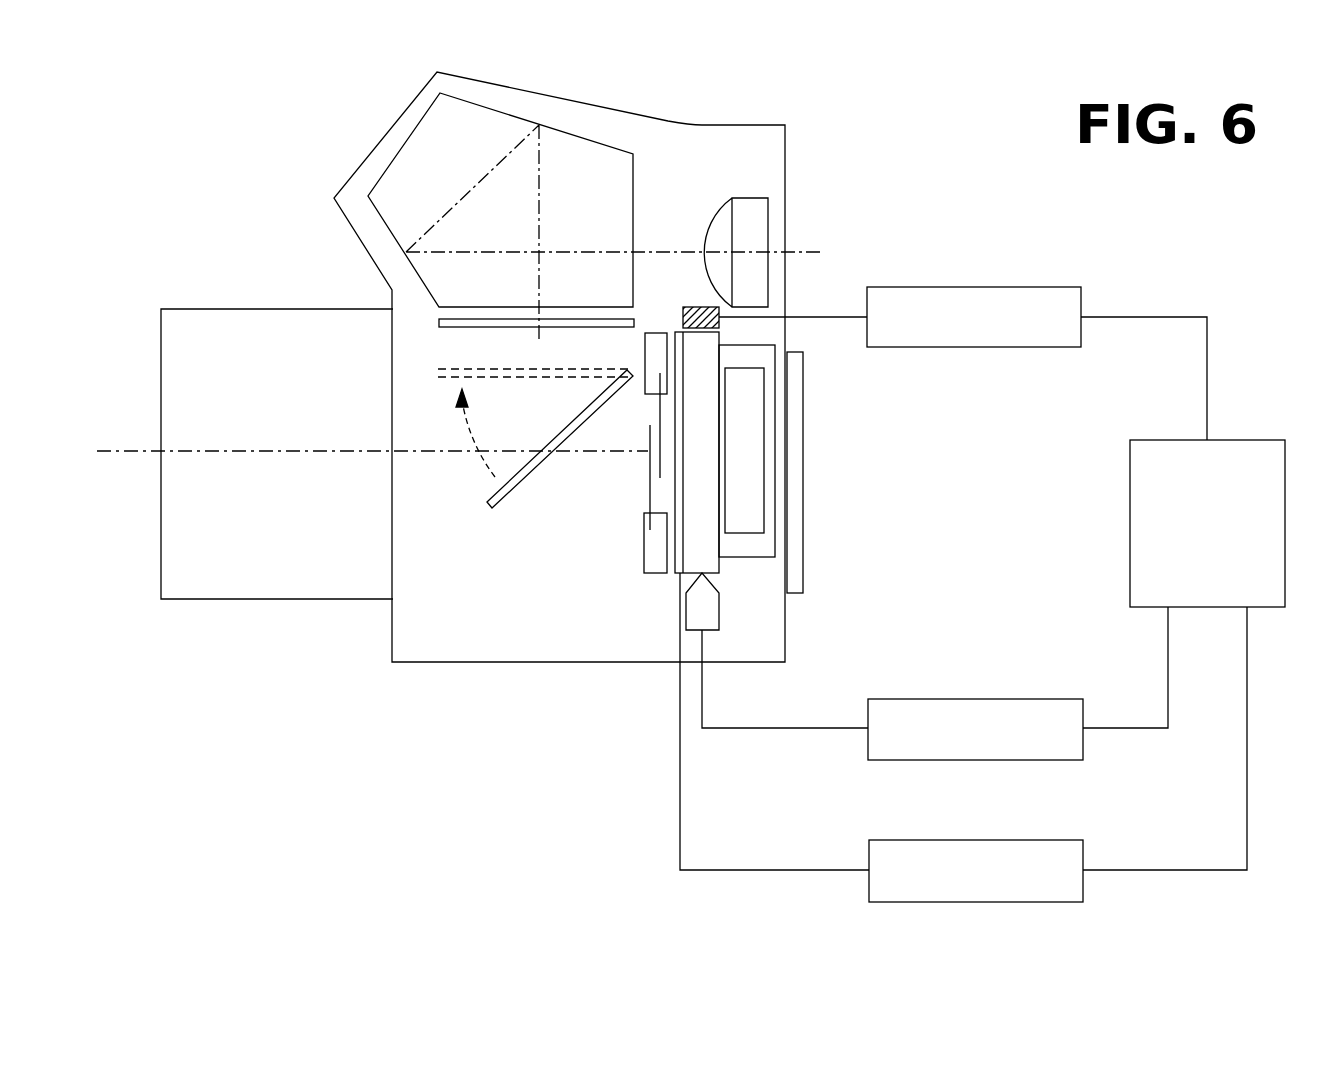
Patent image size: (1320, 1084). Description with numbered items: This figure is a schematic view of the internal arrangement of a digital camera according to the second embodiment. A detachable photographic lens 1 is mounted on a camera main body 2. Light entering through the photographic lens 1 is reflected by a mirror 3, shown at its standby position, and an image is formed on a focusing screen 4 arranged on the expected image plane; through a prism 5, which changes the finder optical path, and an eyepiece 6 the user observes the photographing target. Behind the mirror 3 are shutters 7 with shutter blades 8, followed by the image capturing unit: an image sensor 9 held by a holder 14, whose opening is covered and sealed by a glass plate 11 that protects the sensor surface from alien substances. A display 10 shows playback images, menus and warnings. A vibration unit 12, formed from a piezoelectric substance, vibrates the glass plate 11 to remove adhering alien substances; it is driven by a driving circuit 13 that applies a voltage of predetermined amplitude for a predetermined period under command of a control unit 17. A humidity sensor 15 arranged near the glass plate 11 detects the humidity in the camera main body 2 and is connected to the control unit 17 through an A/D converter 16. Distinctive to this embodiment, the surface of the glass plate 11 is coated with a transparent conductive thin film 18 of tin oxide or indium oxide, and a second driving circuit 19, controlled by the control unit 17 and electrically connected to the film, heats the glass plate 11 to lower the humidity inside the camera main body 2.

The photographic lens 1 is at (268, 309).
The camera main body 2 is at (787, 160).
The mirror 3 is at (518, 484).
The focusing screen 4 is at (456, 329).
The prism 5 is at (635, 170).
The eyepiece 6 is at (750, 198).
The shutters 7 is at (645, 553).
The shutter blades 8 is at (657, 408).
The image sensor 9 is at (765, 510).
The display 10 is at (803, 398).
The glass plate 11 is at (719, 567).
The vibration unit 12 is at (719, 622).
The driving circuit 13 is at (975, 699).
The holder 14 is at (775, 453).
The humidity sensor 15 is at (697, 307).
The A/D converter 16 is at (973, 287).
The control unit 17 is at (1130, 520).
The transparent conductive thin film 18 is at (673, 574).
The driving circuit 19 is at (975, 840).